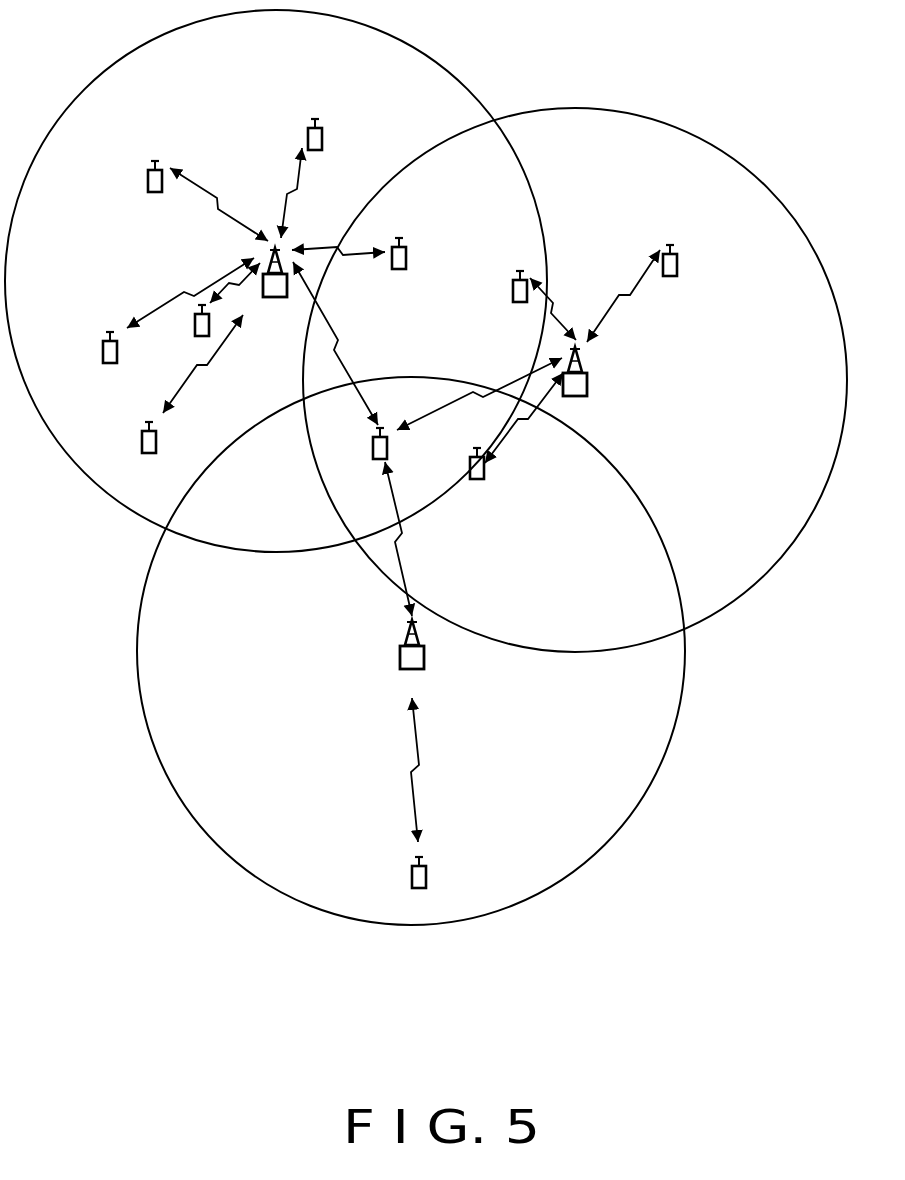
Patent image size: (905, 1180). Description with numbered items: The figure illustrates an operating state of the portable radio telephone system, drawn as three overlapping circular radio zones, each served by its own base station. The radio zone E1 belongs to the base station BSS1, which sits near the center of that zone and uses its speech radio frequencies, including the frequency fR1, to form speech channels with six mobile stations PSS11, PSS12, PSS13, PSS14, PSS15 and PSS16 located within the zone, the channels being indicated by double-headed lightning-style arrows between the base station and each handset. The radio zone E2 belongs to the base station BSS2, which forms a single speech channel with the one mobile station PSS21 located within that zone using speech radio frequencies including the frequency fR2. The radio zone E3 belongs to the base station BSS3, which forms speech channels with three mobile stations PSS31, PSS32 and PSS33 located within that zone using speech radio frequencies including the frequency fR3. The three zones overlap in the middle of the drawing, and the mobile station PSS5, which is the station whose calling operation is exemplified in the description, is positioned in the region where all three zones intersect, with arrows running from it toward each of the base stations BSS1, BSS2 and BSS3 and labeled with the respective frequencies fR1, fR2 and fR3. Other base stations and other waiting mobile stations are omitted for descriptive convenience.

The radio zone E1 is at (96, 78).
The radio zone E2 is at (260, 878).
The radio zone E3 is at (728, 158).
The base station BSS1 is at (280, 290).
The base station BSS2 is at (418, 660).
The base station BSS3 is at (598, 387).
The mobile station PSS11 is at (200, 201).
The mobile station PSS12 is at (156, 327).
The mobile station PSS13 is at (182, 401).
The mobile station PSS14 is at (197, 314).
The mobile station PSS15 is at (329, 178).
The mobile station PSS16 is at (376, 270).
The mobile station PSS5 is at (412, 457).
The mobile station PSS21 is at (420, 811).
The mobile station PSS31 is at (519, 305).
The mobile station PSS32 is at (661, 293).
The mobile station PSS33 is at (515, 442).
The speech radio frequency fR1 is at (340, 343).
The speech radio frequency fR2 is at (419, 539).
The speech radio frequency fR3 is at (479, 383).